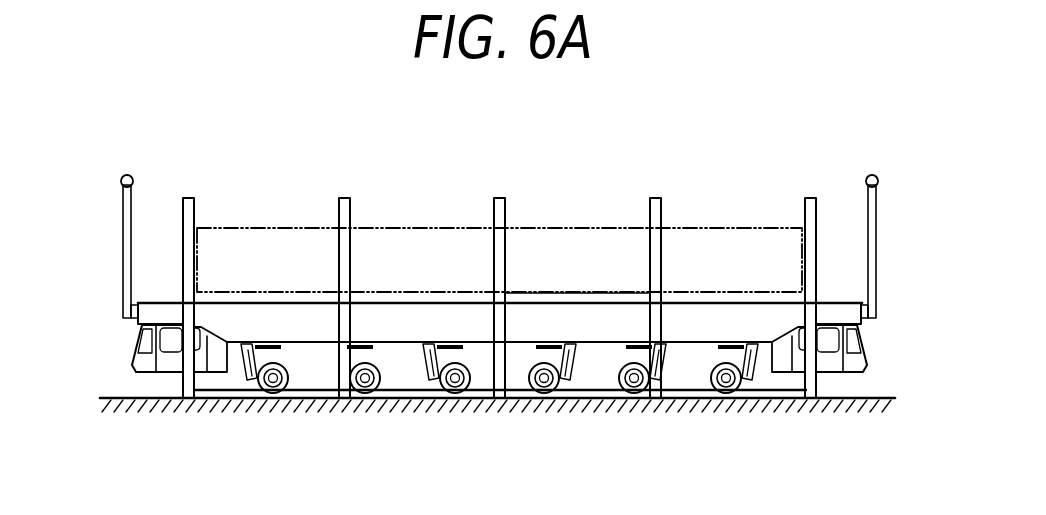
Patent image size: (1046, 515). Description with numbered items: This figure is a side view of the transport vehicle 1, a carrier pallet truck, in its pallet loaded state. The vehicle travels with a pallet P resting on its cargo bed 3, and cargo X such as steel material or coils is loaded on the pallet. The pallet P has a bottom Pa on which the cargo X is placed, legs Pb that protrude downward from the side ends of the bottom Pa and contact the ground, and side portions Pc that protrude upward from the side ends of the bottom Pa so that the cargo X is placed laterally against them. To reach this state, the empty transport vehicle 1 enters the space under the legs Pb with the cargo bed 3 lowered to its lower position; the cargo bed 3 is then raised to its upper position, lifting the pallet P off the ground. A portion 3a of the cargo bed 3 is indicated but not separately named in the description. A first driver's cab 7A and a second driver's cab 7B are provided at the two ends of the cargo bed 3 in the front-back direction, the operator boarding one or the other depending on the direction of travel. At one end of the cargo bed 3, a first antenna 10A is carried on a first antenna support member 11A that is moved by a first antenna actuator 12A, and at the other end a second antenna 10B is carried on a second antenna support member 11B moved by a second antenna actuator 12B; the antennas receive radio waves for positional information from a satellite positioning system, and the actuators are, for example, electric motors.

The transport vehicle 1 is at (499, 304).
The cargo bed 3 is at (500, 373).
The loading surface of vehicle body 3a is at (418, 303).
The pallet P is at (188, 198).
The bottom Pa is at (553, 298).
The legs Pb is at (507, 353).
The side portions Pc is at (500, 198).
The cargo X is at (602, 227).
The first driver's cab 7A is at (850, 368).
The second driver's cab 7B is at (143, 367).
The first antenna 10A is at (872, 176).
The second antenna 10B is at (126, 175).
The first antenna support member 11A is at (878, 223).
The second antenna support member 11B is at (123, 224).
The first antenna actuator 12A is at (865, 325).
The second antenna actuator 12B is at (135, 323).